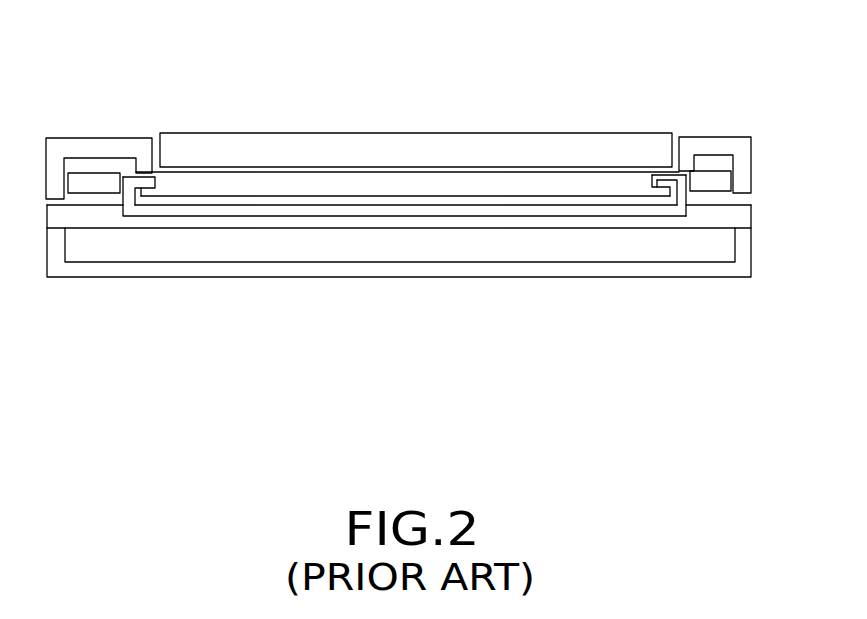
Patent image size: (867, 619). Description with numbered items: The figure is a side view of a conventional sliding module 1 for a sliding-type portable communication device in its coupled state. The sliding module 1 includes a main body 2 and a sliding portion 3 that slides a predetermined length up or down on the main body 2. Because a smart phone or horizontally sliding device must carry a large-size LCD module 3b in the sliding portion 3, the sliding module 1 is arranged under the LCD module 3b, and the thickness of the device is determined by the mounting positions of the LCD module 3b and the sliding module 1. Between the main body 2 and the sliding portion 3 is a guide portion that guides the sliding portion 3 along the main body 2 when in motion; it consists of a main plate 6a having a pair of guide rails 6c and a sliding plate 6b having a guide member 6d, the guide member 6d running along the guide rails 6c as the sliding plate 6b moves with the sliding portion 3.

The sliding module 1 is at (555, 346).
The main body 2 is at (193, 243).
The sliding portion 3 is at (103, 150).
The LCD module 3b is at (248, 150).
The main plate 6a is at (684, 202).
The sliding plate 6b is at (564, 188).
The guide rails 6c is at (670, 188).
The guide member 6d is at (678, 173).